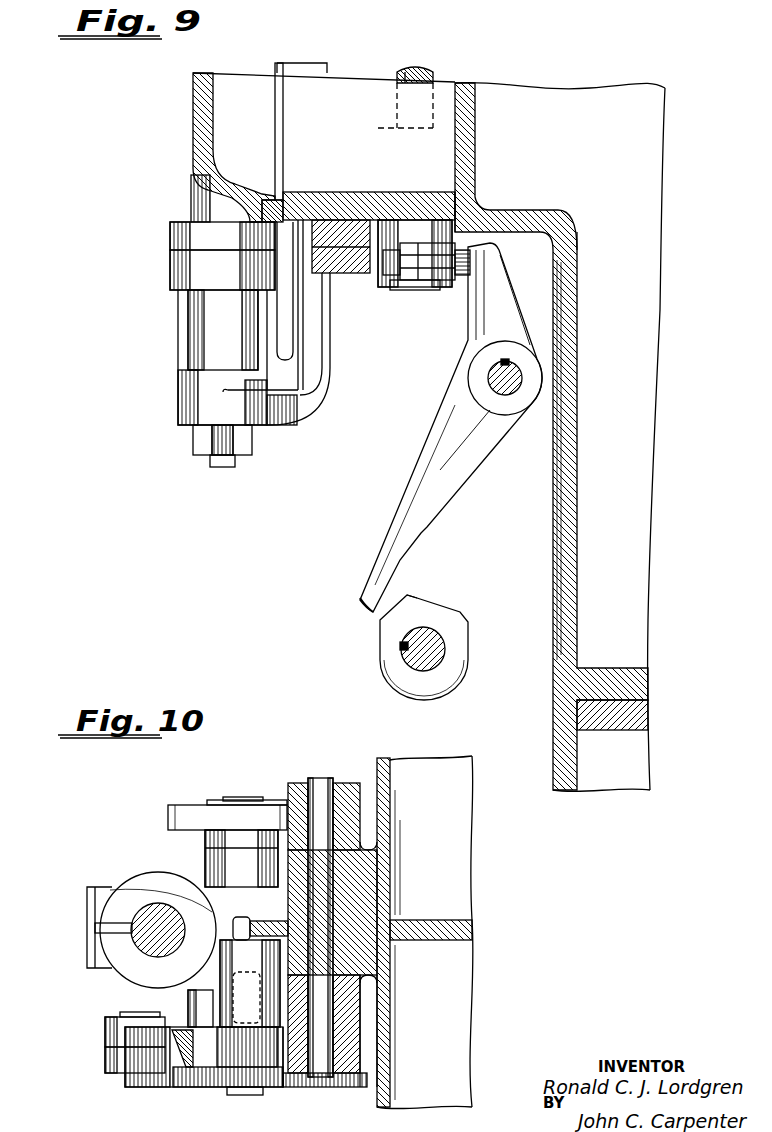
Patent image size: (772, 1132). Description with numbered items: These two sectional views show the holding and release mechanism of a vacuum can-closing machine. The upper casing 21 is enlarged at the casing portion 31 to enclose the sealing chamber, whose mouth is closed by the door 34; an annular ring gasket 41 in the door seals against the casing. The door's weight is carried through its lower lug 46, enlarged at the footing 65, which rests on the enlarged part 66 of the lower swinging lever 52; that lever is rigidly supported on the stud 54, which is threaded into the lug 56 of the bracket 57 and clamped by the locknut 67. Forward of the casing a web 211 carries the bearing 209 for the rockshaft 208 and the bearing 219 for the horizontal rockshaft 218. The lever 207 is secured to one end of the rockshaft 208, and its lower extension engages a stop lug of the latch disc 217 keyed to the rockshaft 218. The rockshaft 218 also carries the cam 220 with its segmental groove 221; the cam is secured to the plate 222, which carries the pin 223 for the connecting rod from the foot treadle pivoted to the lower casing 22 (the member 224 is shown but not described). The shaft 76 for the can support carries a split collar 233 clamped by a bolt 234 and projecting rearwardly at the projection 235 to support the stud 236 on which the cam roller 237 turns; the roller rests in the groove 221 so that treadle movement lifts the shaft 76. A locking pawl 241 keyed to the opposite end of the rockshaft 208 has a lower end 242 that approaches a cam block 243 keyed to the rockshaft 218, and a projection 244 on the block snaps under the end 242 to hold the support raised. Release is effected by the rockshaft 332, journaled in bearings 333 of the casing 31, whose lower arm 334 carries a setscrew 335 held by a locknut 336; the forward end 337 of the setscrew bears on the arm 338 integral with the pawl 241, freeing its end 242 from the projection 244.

In FIG. 9, the upper casing 21 is at (556, 486).
In FIG. 10, the upper casing 21 is at (386, 985).
In FIG. 9, the casing 22 is at (556, 719).
In FIG. 9, the enlarged casing portion 31 is at (344, 95).
In FIG. 10, the enlarged casing portion 31 is at (393, 789).
In FIG. 9, the door 34 is at (200, 118).
In FIG. 9, the annular ring gasket 41 is at (282, 200).
In FIG. 9, the lower lug 46 is at (196, 198).
In FIG. 9, the swinging arm 52 is at (200, 331).
In FIG. 9, the stud 54 is at (216, 460).
In FIG. 9, the lug 56 is at (183, 403).
In FIG. 9, the bracket 57 is at (316, 346).
In FIG. 9, the enlarged portion of lower lug 65 is at (172, 236).
In FIG. 9, the enlarged part of lever 66 is at (186, 268).
In FIG. 9, the locknut 67 is at (197, 440).
In FIG. 10, the shaft 76 is at (155, 905).
In FIG. 10, the lever 207 is at (352, 1012).
In FIG. 9, the rockshaft 208 is at (490, 379).
In FIG. 10, the rockshaft 208 is at (321, 778).
In FIG. 10, the bearing 209 is at (378, 876).
In FIG. 10, the web 211 is at (262, 929).
In FIG. 10, the latch disc 217 is at (200, 1001).
In FIG. 9, the horizontal rockshaft 218 is at (440, 650).
In FIG. 10, the horizontal rockshaft 218 is at (256, 799).
In FIG. 10, the bearing 219 is at (215, 855).
In FIG. 10, the cam 220 is at (143, 1080).
In FIG. 10, the segmental groove 221 is at (189, 1068).
In FIG. 10, the plate 222 is at (106, 1040).
In FIG. 10, the pin 223 is at (126, 1012).
In FIG. 10, the clamp block 224 is at (108, 1059).
In FIG. 10, the split collar 233 is at (129, 884).
In FIG. 10, the bolt 234 is at (95, 928).
In FIG. 10, the rearward projection of collar 235 is at (265, 960).
In FIG. 10, the stud 236 is at (222, 1078).
In FIG. 10, the cam roller 237 is at (276, 1072).
In FIG. 9, the locking pawl 241 is at (440, 500).
In FIG. 10, the locking pawl 241 is at (349, 785).
In FIG. 9, the lower end of pawl 242 is at (362, 593).
In FIG. 10, the lower end of pawl 242 is at (227, 817).
In FIG. 9, the cam block 243 is at (386, 637).
In FIG. 10, the cam block 243 is at (211, 800).
In FIG. 9, the projection 244 is at (414, 601).
In FIG. 9, the rockshaft 332 is at (432, 75).
In FIG. 9, the bearings 333 is at (378, 144).
In FIG. 9, the arm 334 is at (444, 224).
In FIG. 9, the setscrew 335 is at (392, 283).
In FIG. 9, the locknut 336 is at (413, 286).
In FIG. 9, the forward end of setscrew 337 is at (470, 263).
In FIG. 9, the arm 338 is at (486, 302).